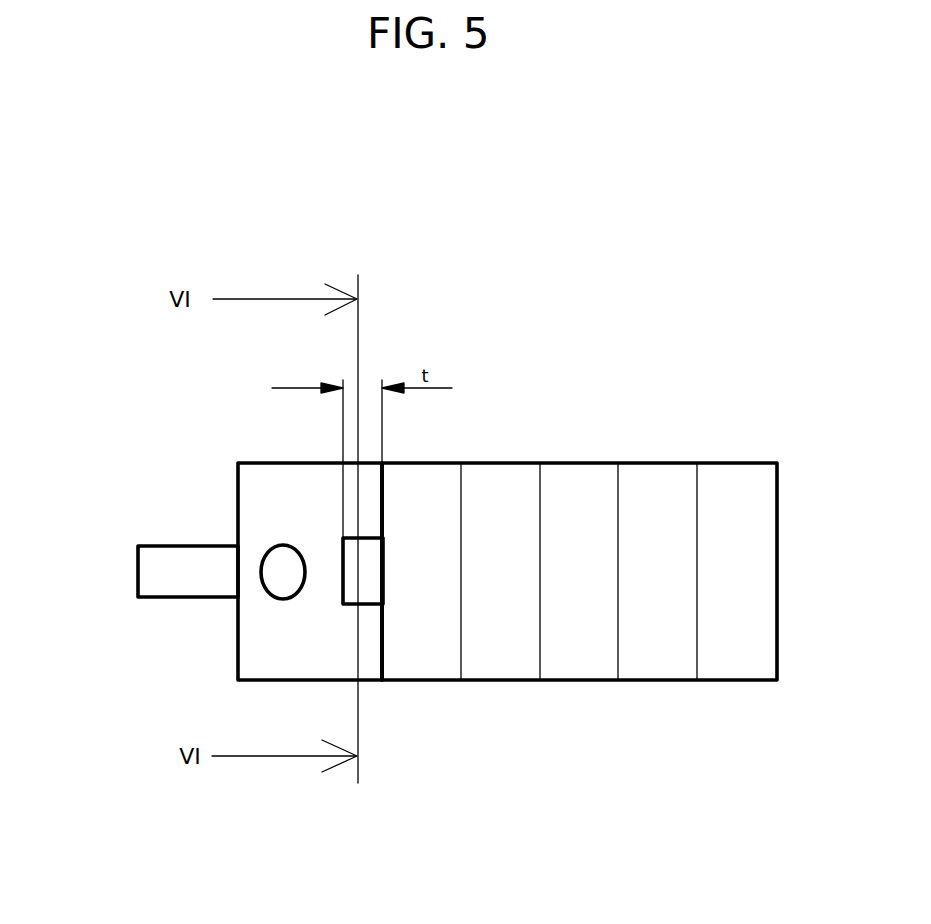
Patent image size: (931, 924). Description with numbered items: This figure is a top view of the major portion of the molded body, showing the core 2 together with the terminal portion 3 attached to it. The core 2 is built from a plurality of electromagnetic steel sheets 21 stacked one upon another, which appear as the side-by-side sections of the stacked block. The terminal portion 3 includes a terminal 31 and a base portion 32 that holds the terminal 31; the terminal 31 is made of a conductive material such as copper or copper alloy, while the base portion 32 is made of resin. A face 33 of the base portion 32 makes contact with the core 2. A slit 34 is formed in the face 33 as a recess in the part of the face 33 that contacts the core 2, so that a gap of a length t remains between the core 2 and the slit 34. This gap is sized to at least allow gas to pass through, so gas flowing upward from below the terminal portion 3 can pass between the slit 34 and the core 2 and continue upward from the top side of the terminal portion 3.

The core 2 is at (599, 459).
The electromagnetic steel sheet 21 is at (447, 473).
The terminal portion 3 is at (231, 623).
The terminal 31 is at (281, 571).
The base portion 32 is at (282, 644).
The face 33 is at (387, 647).
The slit 34 is at (345, 564).